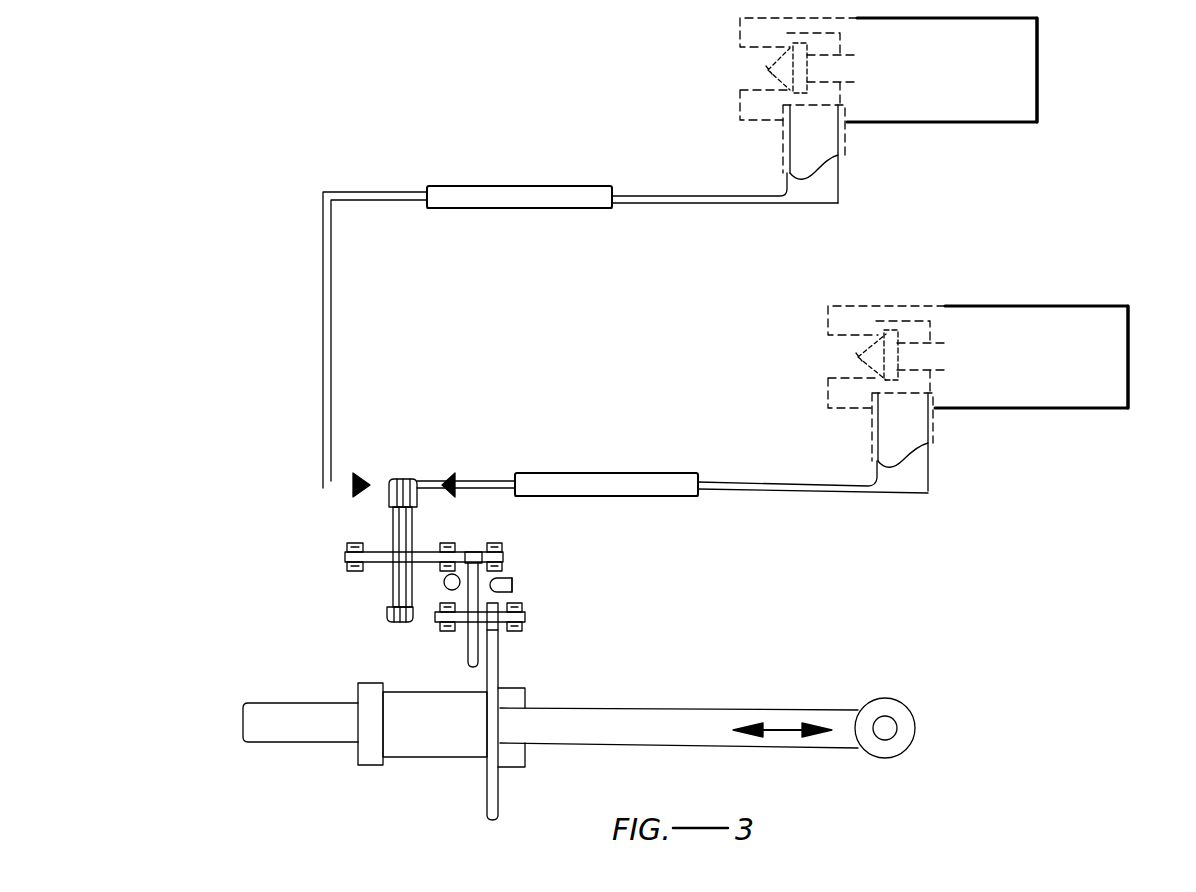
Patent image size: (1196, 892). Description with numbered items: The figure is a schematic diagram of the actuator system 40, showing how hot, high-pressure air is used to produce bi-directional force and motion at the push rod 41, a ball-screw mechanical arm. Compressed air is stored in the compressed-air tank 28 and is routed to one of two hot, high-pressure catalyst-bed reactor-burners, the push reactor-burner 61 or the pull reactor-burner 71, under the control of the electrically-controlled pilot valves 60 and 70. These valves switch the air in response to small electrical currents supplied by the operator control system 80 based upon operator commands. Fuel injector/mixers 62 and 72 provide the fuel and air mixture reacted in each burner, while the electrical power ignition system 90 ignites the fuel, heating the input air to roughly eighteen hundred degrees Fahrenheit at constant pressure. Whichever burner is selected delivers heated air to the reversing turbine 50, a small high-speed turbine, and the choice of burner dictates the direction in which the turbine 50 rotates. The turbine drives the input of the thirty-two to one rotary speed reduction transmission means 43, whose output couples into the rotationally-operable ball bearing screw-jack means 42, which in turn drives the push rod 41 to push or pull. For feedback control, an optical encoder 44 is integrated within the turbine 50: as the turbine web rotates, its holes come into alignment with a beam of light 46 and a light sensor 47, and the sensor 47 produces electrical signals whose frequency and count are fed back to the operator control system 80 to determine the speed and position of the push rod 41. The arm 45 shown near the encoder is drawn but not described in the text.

The actuator system 40 is at (240, 117).
The compressed-air tank 28 is at (766, 70).
The operator control system 80 is at (1052, 36).
The pull control valve 70 is at (898, 124).
The push control valve 60 is at (975, 410).
The pull reactor-burner 71 is at (484, 184).
The push reactor-burner 61 is at (566, 470).
The fuel injector/mixer 72 is at (664, 206).
The fuel injector/mixer 62 is at (803, 494).
The electrical power ignition system 90 is at (575, 216).
The reversing turbine 50 is at (385, 520).
The beam of light 46 is at (446, 590).
The light sensor 47 is at (509, 578).
The optical encoder 44 is at (530, 588).
The lower arm 45 is at (493, 597).
The rotary speed reduction transmission means 43 is at (467, 649).
The ball bearing screw-jack means 42 is at (527, 697).
The push rod 41 is at (658, 704).